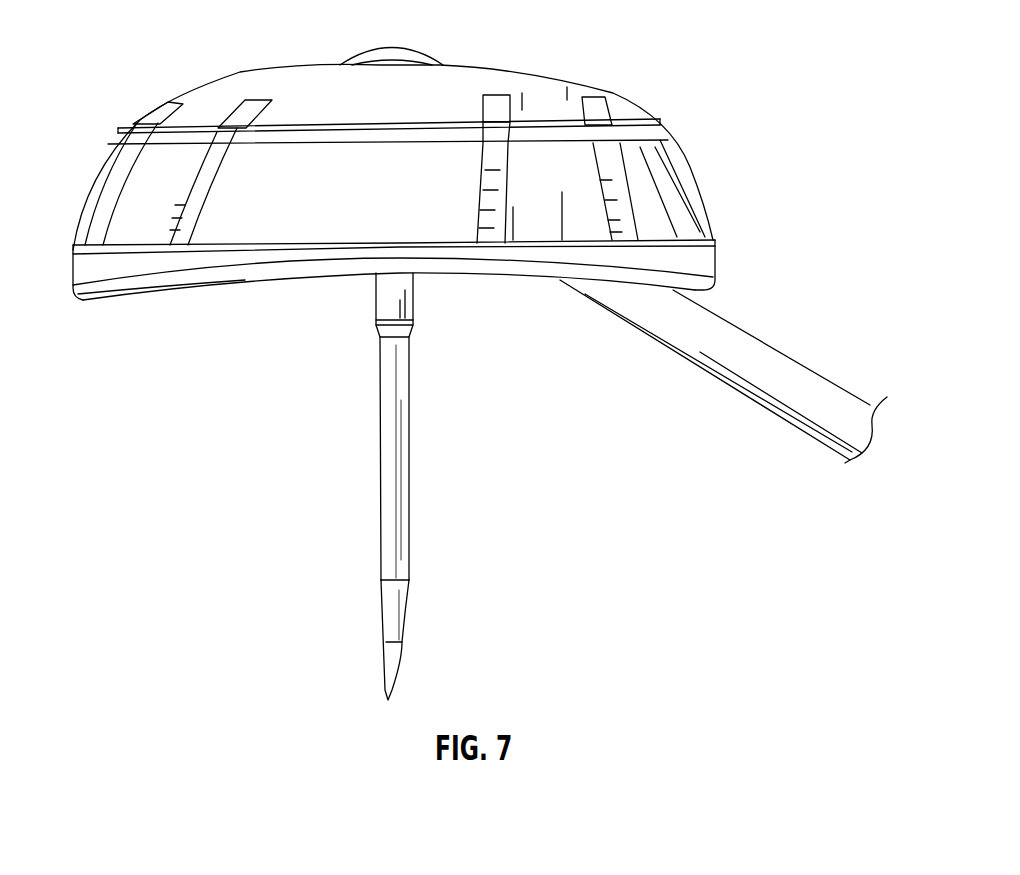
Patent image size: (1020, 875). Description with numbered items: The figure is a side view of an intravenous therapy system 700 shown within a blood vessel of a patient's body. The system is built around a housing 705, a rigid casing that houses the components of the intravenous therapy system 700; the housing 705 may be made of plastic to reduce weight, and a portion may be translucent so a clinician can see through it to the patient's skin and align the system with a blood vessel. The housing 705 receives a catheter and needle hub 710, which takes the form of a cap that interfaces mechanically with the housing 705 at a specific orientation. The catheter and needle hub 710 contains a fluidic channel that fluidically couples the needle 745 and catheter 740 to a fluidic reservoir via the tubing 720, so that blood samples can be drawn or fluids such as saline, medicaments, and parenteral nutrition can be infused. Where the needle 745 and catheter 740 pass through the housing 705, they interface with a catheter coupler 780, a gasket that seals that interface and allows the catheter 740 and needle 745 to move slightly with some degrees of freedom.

The intravenous therapy system 700 is at (127, 42).
The housing 705 is at (125, 202).
The catheter and needle hub 710 is at (192, 100).
The tubing 720 is at (803, 383).
The catheter 740 is at (397, 555).
The needle 745 is at (398, 662).
The catheter coupler 780 is at (387, 297).